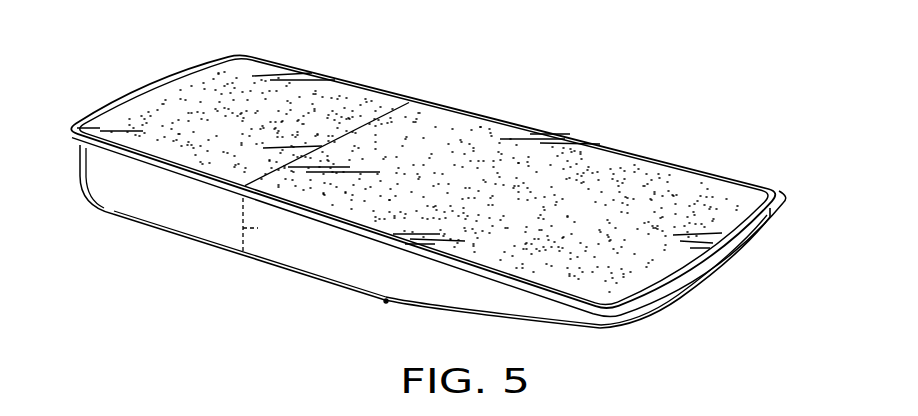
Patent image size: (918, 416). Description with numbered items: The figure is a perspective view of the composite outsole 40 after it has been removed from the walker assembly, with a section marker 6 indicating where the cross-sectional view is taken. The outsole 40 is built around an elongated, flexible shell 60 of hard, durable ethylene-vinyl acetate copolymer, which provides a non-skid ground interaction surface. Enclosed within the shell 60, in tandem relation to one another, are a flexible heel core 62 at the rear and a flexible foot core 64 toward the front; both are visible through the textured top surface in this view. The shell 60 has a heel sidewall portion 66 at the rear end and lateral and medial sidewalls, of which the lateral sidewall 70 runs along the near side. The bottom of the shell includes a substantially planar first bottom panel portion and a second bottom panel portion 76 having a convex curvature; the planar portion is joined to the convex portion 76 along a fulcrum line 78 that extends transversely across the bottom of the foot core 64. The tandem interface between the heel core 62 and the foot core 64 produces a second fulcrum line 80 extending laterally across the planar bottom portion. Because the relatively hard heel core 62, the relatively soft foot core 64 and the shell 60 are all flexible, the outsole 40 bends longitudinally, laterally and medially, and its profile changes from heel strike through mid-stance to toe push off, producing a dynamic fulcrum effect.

The composite outsole 40 is at (637, 113).
The flexible shell 60 is at (141, 197).
The flexible heel core 62 is at (309, 84).
The flexible foot core 64 is at (514, 157).
The heel sidewall portion 66 is at (80, 180).
The lateral sidewall 70 is at (327, 258).
The second bottom panel portion 76 is at (540, 326).
The fulcrum line 78 is at (386, 303).
The fulcrum line 80 is at (243, 254).
The section line for FIG. 6 is at (97, 80).